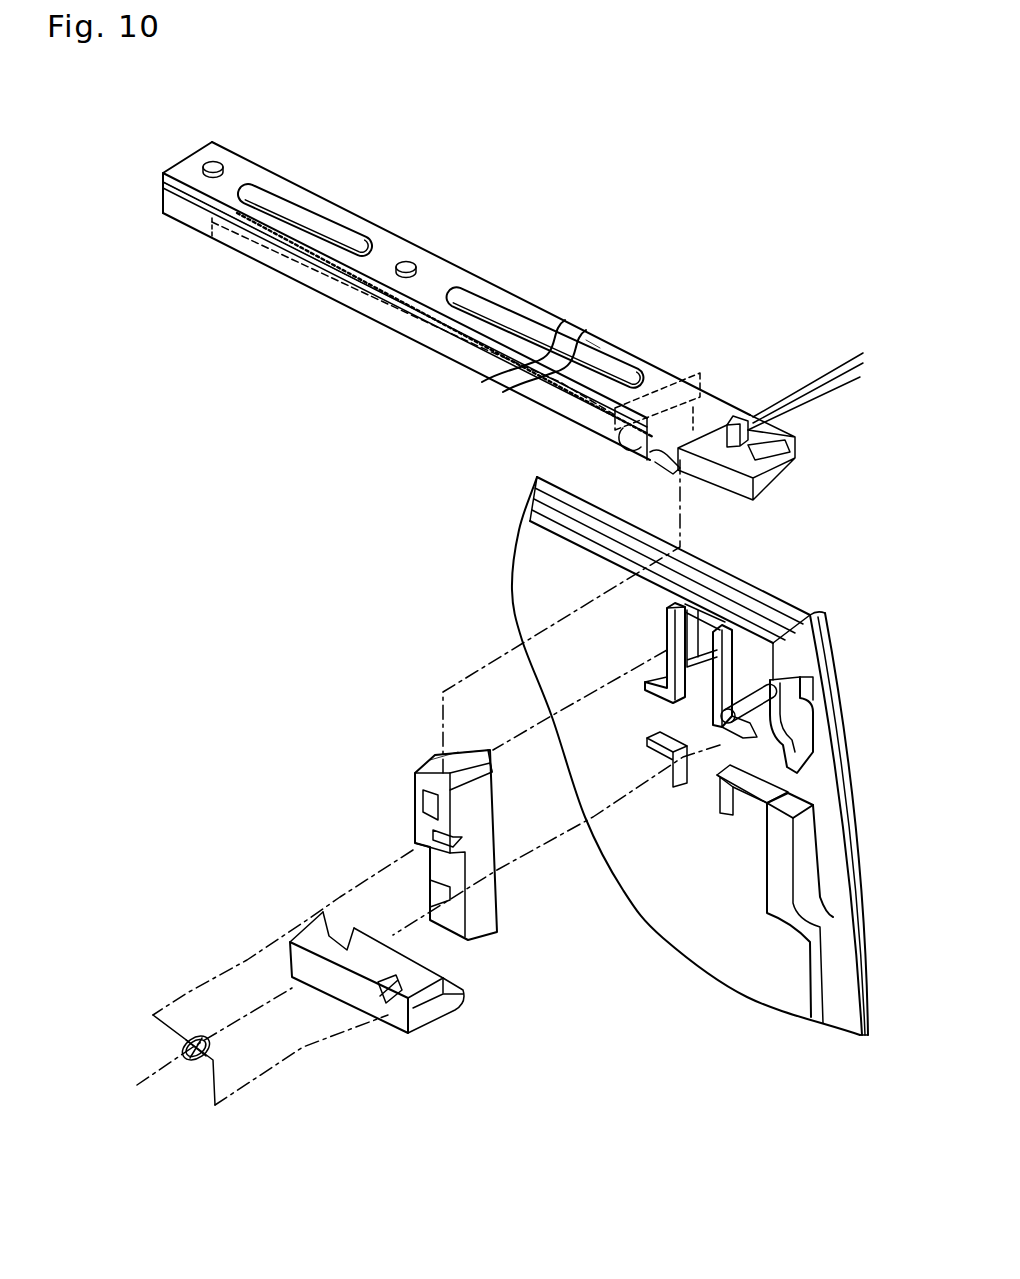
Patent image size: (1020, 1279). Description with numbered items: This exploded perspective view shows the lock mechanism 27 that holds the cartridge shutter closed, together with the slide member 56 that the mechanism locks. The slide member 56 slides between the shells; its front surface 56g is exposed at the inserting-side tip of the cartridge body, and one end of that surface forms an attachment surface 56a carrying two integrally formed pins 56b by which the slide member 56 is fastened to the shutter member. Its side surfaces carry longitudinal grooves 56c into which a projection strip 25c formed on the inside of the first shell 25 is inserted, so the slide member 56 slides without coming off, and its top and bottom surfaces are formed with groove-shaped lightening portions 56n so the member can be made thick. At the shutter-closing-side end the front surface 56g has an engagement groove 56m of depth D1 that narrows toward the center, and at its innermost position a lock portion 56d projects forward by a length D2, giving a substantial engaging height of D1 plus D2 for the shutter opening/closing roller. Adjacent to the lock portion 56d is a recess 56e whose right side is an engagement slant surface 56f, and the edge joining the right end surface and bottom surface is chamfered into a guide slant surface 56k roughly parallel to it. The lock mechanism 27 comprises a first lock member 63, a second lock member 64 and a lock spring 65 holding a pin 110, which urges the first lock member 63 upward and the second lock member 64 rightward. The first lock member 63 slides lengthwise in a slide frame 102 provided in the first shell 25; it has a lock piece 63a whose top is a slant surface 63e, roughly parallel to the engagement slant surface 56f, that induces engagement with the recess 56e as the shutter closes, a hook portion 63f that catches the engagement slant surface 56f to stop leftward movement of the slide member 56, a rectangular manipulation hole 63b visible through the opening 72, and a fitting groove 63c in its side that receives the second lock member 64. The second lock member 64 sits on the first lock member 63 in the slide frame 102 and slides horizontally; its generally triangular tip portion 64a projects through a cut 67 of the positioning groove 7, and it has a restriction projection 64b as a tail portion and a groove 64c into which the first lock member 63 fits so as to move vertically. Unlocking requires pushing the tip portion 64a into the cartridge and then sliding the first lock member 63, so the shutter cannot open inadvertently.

The slide member 56 is at (645, 352).
The attachment surface 56a is at (258, 175).
The pins 56b is at (217, 160).
The lightening portions 56n is at (300, 207).
The front surface 56g is at (597, 342).
The recess 56e is at (689, 390).
The grooves 56c is at (548, 392).
The engagement slant surface 56f is at (670, 466).
The lock portion 56d is at (770, 432).
The engagement groove 56m is at (797, 452).
The guide slant surface 56k is at (758, 500).
The depth of engagement groove D1 is at (853, 403).
The projection length of lock portion D2 is at (853, 318).
The first shell 25 is at (780, 583).
The projection strip 25c is at (547, 523).
The positioning groove 7 is at (817, 724).
The cut 67 is at (825, 790).
The opening 72 is at (703, 632).
The pin 110 is at (762, 685).
The slide frame 102 is at (717, 795).
The lock mechanism 27 is at (176, 772).
The lock spring 65 is at (153, 1015).
The first lock member 63 is at (400, 765).
The slant surface 63e is at (437, 762).
The lock piece 63a is at (462, 752).
The hook portion 63f is at (470, 780).
The manipulation hole 63b is at (430, 800).
The fitting groove 63c is at (440, 897).
The second lock member 64 is at (402, 1050).
The tip portion 64a is at (447, 1012).
The restriction projection 64b is at (330, 927).
The groove 64c is at (348, 946).